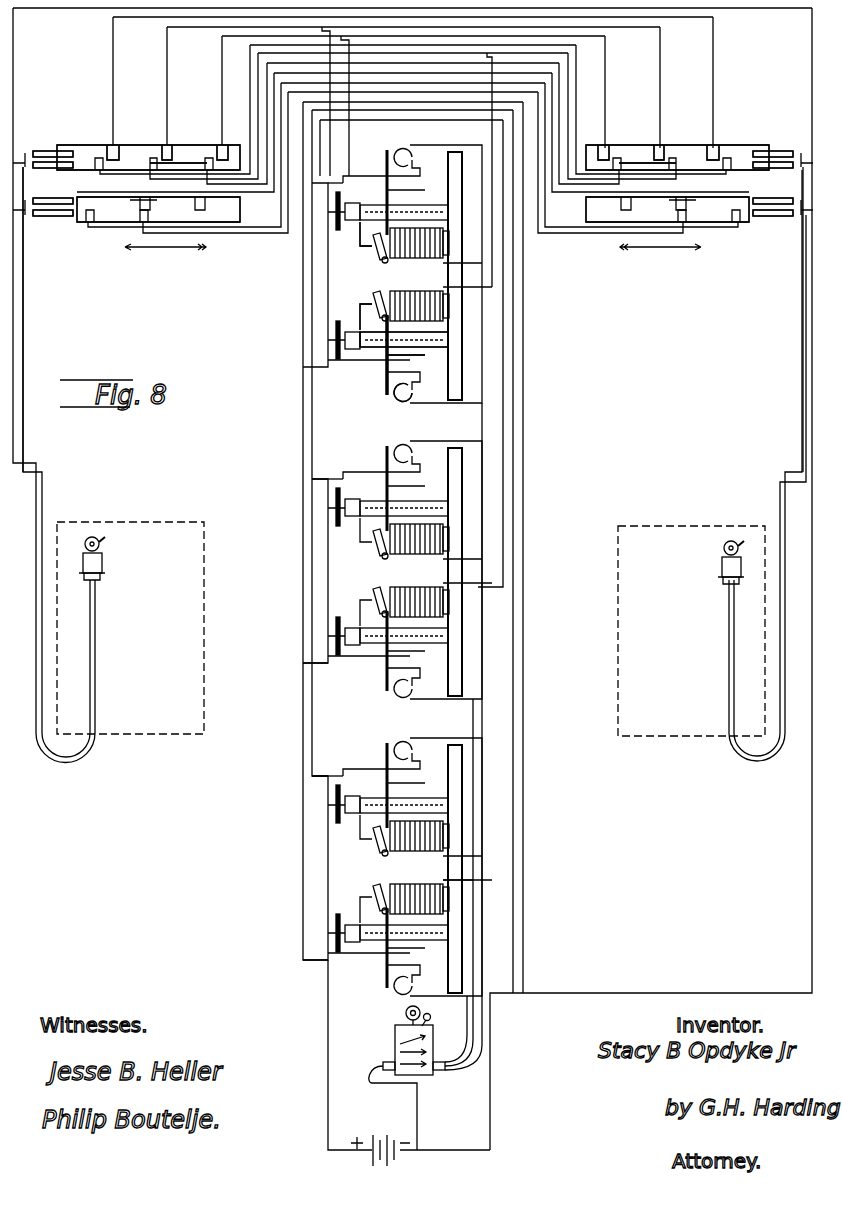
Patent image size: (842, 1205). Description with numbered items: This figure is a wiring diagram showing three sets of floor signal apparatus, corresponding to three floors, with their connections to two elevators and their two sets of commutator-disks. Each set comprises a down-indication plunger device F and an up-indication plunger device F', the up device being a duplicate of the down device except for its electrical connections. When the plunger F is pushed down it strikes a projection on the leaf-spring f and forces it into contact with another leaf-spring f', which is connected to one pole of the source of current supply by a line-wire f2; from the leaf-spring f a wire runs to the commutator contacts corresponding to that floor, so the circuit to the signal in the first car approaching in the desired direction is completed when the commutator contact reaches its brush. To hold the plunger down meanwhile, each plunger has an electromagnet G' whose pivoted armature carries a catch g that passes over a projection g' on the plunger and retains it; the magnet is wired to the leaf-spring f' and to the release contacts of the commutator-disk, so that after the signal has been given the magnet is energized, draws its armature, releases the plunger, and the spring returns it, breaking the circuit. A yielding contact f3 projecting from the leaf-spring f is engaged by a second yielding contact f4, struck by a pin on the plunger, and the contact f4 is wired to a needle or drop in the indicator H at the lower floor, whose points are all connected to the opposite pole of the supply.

The up-indication plunger device F' is at (348, 223).
The line-wire f2 is at (340, 253).
The electromagnet G' is at (418, 295).
The catch g is at (368, 300).
The projection g' is at (354, 312).
The down-indication plunger device F is at (354, 337).
The leaf-spring f is at (404, 346).
The leaf-spring f' is at (413, 365).
The yielding contact f3 is at (388, 392).
The yielding contact f4 is at (400, 398).
The indicator H is at (393, 1032).